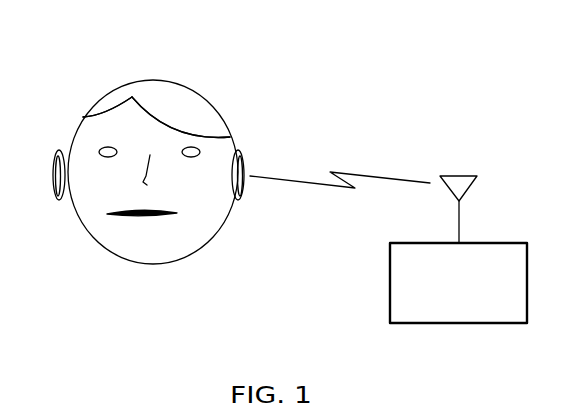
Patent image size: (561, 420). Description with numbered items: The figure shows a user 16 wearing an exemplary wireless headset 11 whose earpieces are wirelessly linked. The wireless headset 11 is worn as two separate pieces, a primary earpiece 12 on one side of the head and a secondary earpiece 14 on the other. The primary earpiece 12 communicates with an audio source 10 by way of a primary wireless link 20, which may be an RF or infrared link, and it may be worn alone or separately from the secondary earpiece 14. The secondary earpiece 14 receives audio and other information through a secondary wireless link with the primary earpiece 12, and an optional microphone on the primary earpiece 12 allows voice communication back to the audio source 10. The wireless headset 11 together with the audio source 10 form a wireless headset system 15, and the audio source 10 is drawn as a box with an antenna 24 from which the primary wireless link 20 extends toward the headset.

The audio source 10 is at (472, 323).
The wireless headset 11 is at (290, 108).
The primary earpiece 12 is at (240, 150).
The secondary earpiece 14 is at (57, 152).
The wireless headset system 15 is at (472, 58).
The user 16 is at (148, 80).
The primary wireless link 20 is at (356, 173).
The antenna 24 is at (461, 210).